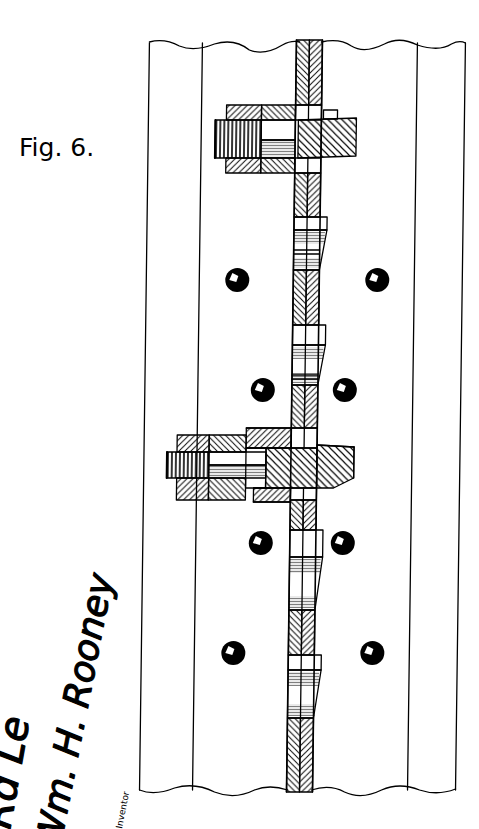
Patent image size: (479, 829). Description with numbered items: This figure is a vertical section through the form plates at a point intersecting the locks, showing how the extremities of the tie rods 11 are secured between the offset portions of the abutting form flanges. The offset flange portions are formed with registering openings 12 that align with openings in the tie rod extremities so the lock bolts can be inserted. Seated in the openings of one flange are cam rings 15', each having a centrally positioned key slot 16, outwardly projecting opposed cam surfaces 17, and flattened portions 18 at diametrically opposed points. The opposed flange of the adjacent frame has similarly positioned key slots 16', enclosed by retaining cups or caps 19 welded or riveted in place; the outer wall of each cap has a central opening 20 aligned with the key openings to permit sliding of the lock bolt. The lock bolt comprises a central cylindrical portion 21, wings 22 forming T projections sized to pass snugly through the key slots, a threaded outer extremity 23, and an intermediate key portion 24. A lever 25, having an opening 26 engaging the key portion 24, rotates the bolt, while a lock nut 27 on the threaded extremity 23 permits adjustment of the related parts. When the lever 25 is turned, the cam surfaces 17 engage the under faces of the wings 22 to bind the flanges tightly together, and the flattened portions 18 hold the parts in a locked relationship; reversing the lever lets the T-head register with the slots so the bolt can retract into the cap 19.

The tie rods 11 is at (330, 515).
The registering openings 12 is at (298, 268).
The cam rings 15' is at (334, 472).
The key slots 16 is at (326, 474).
The key slots 16' is at (287, 443).
The cam surfaces 17 is at (330, 373).
The flattened portions 18 is at (300, 256).
The retaining cups or caps 19 is at (264, 428).
The central opening 20 is at (261, 432).
The central cylindrical portion 21 is at (329, 446).
The wings 22 is at (356, 445).
The threaded outer extremity 23 is at (179, 462).
The intermediate key portion 24 is at (229, 500).
The levers 25 is at (237, 503).
The openings 26 is at (280, 172).
The lock nut 27 is at (190, 492).